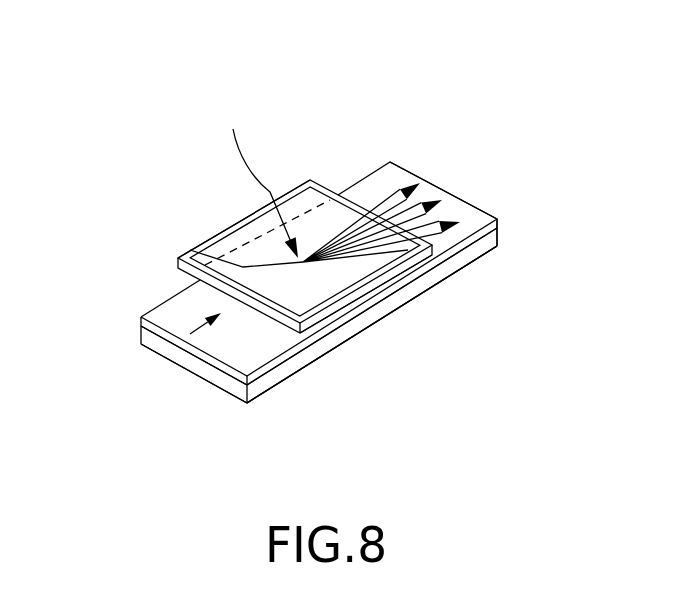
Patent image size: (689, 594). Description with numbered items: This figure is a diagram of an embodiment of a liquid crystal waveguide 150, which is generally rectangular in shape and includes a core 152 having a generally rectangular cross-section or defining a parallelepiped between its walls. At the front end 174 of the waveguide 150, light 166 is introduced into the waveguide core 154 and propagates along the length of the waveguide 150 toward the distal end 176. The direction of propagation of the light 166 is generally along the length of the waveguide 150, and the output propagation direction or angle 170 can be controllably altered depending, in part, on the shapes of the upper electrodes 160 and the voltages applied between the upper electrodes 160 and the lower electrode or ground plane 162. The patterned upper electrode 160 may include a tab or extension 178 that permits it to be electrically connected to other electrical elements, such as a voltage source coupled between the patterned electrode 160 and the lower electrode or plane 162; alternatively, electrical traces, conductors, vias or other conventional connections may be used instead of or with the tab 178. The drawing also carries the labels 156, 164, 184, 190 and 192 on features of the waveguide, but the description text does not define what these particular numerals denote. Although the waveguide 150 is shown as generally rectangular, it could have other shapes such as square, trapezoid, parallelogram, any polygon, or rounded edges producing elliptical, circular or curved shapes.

The waveguide 150 is at (108, 87).
The core 152 is at (141, 318).
The waveguide core 154 is at (203, 284).
The edge 156 is at (497, 217).
The upper electrode 160 is at (190, 250).
The lower electrode or plane 162 is at (480, 247).
The incident light 164 is at (258, 182).
The light 166 is at (200, 334).
The output propagation direction or angle 170 is at (440, 190).
The front end 174 is at (157, 350).
The distal end 176 is at (497, 228).
The tab or extension 178 is at (185, 255).
The optical axis 184 is at (298, 187).
The bottom surface 190 is at (270, 378).
The side wall 192 is at (312, 330).